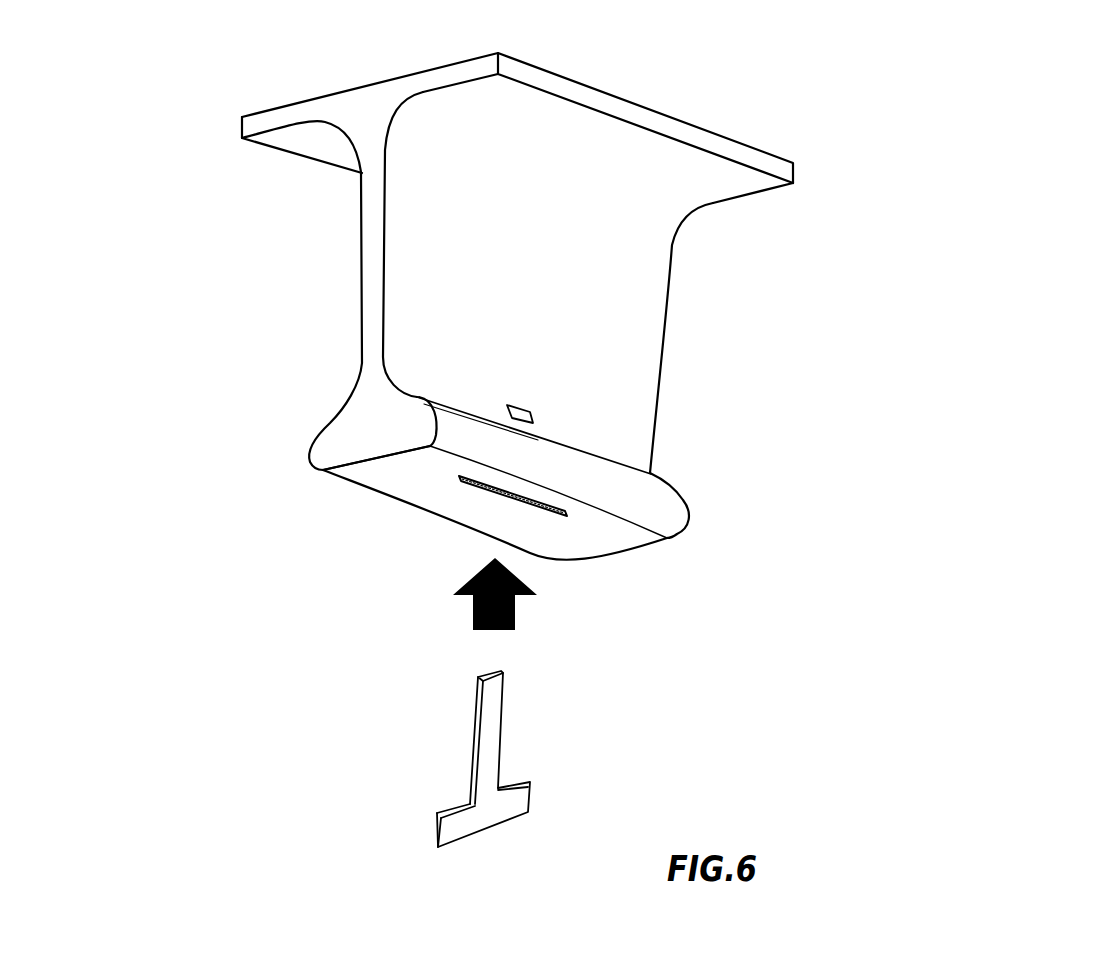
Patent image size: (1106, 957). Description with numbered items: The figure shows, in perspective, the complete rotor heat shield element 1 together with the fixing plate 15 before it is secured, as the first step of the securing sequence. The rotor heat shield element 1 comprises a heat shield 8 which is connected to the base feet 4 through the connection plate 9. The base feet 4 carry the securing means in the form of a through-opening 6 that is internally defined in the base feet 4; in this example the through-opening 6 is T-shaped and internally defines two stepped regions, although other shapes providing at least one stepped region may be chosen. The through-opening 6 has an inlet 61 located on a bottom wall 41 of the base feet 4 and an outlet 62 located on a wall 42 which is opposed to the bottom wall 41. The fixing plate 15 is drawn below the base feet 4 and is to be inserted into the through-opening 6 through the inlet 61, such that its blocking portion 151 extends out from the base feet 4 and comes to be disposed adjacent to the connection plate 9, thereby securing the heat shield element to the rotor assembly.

The rotor heat shield element 1 is at (585, 369).
The base feet 4 is at (659, 492).
The through-opening 6 is at (540, 459).
The heat shield 8 is at (300, 113).
The connection plate 9 is at (555, 290).
The fixing plate 15 is at (494, 759).
The bottom wall 41 is at (404, 483).
The wall 42 is at (426, 399).
The inlet 61 is at (549, 515).
The outlet 62 is at (535, 398).
The blocking portion 151 is at (494, 695).